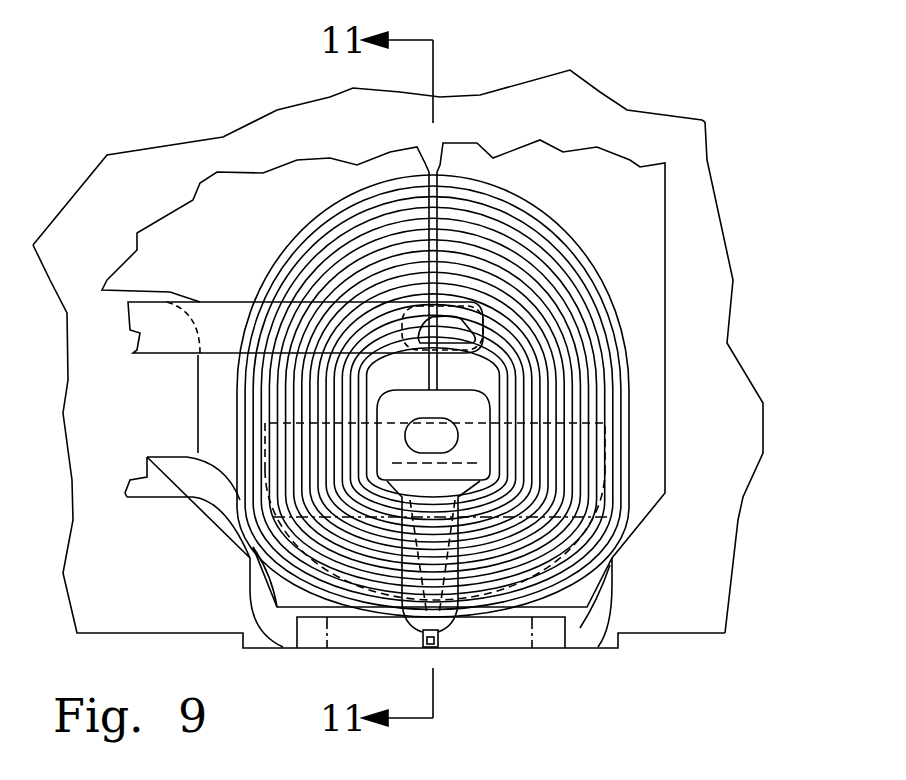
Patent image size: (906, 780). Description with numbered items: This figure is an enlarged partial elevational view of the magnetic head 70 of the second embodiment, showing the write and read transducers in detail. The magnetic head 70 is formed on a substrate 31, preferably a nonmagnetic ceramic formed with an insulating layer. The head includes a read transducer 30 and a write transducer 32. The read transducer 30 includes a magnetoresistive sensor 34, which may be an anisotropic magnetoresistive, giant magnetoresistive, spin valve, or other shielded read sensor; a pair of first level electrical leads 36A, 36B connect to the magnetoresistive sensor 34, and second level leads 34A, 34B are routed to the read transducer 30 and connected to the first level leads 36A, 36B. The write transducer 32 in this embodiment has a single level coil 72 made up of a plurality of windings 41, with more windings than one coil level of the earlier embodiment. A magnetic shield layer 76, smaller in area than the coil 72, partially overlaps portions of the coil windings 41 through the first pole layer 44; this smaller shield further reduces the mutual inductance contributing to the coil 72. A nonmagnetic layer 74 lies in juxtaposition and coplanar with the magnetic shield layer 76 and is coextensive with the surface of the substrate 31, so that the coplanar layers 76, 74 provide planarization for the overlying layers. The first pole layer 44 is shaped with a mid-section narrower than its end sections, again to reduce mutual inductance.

The magnetic head 70 is at (158, 78).
The substrate 31 is at (690, 120).
The nonmagnetic layer 74 is at (700, 218).
The lead 34A is at (198, 222).
The lead 34B is at (570, 160).
The windings 41 is at (315, 232).
The single level coil 72 is at (612, 272).
The first level electrical lead 36A is at (162, 338).
The first level electrical lead 36B is at (158, 482).
The magnetic shield layer 76 is at (612, 597).
The first pole layer 44 is at (578, 632).
The write transducer 32 is at (378, 630).
The magnetoresistive sensor 34 is at (422, 635).
The read transducer 30 is at (450, 628).